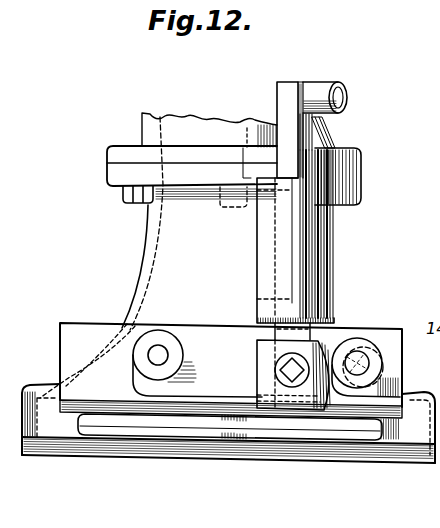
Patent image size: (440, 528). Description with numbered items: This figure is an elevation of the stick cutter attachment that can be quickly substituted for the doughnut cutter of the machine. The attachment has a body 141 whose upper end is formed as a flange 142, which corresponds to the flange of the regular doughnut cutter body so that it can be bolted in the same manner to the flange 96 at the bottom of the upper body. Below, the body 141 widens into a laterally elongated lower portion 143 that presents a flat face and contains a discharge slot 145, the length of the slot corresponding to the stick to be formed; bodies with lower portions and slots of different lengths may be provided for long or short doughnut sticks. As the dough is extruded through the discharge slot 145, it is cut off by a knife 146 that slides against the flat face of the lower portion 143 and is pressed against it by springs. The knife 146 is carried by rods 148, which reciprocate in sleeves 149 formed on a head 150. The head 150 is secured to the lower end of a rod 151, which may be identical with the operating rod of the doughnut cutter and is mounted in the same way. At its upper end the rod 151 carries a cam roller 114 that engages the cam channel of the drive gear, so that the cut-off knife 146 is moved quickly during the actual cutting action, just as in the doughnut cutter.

The flange 96 is at (106, 154).
The cam roller 114 is at (322, 90).
The body 141 is at (143, 250).
The flange 142 is at (361, 178).
The lower portion 143 is at (62, 427).
The discharge slot 145 is at (347, 428).
The knife 146 is at (165, 405).
The rods 148 is at (163, 355).
The sleeves 149 is at (373, 363).
The head 150 is at (133, 366).
The rod 151 is at (280, 93).